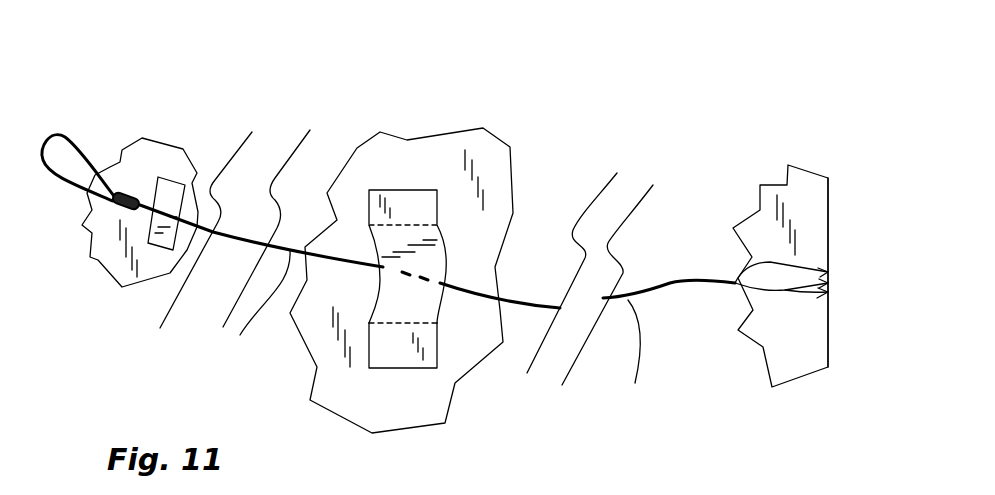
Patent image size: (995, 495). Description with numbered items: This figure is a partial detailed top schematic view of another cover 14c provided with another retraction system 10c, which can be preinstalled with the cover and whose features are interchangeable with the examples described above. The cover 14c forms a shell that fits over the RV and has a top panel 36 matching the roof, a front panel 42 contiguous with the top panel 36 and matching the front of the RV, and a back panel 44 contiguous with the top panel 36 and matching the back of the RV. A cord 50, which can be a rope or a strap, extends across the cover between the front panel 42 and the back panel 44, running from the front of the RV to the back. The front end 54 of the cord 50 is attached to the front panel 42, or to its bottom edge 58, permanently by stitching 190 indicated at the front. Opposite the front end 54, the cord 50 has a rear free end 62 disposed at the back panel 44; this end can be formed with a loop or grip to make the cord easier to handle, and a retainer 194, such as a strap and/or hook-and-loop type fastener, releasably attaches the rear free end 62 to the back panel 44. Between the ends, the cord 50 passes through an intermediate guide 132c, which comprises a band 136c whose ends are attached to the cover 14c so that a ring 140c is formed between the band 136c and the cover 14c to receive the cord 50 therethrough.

The retraction system 10c is at (552, 168).
The cover 14c is at (153, 267).
The top panel 36 is at (477, 165).
The front panel 42 is at (802, 190).
The back panel 44 is at (115, 255).
The cord 50 is at (235, 246).
The front end 54 is at (590, 297).
The bottom edge 58 is at (832, 358).
The rear free end 62 is at (85, 188).
The intermediate guide 132c is at (402, 207).
The band 136c is at (395, 357).
The ring 140c is at (433, 292).
The stitching 190 is at (750, 258).
The retainer 194 is at (173, 192).